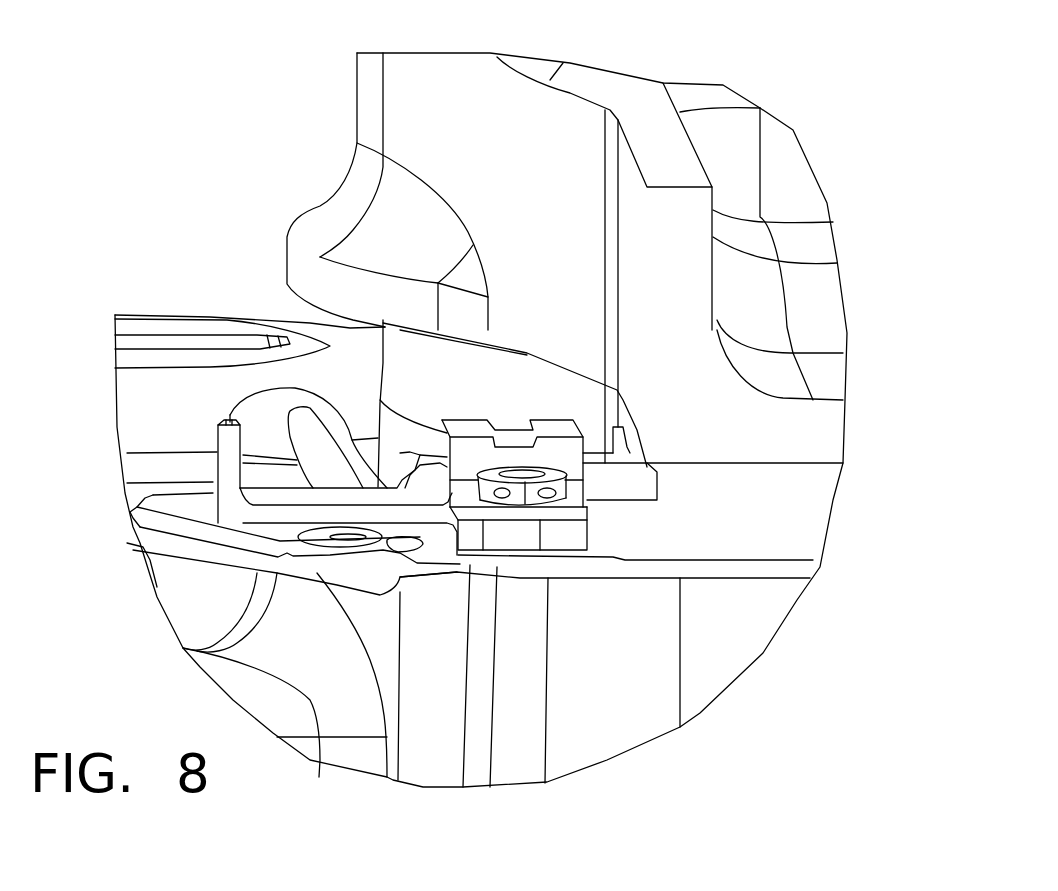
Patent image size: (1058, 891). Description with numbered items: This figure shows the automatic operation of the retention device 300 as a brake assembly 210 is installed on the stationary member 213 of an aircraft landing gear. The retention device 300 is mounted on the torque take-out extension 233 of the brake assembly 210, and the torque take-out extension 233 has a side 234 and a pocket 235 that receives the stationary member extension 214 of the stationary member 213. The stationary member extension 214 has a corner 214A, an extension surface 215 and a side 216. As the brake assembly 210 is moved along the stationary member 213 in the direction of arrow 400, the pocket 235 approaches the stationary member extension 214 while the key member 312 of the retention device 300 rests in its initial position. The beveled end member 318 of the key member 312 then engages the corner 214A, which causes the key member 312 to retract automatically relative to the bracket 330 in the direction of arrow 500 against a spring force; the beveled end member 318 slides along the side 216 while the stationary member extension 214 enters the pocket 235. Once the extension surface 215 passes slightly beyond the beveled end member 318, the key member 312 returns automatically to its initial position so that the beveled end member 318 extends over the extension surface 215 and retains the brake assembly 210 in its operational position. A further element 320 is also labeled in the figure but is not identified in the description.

The brake assembly 210 is at (302, 679).
The stationary member 213 is at (403, 373).
The stationary member extension 214 is at (783, 173).
The corner 214A is at (647, 465).
The extension surface 215 is at (662, 152).
The side 216 is at (627, 185).
The torque take-out extension 233 is at (625, 689).
The side 234 is at (320, 570).
The pocket 235 is at (768, 540).
The retention device 300 is at (135, 406).
The key member 312 is at (250, 395).
The beveled end member 318 is at (613, 457).
The L-shaped bracket 320 is at (216, 466).
The bracket 330 is at (525, 520).
The arrow 400 is at (687, 505).
The arrow 500 is at (705, 436).